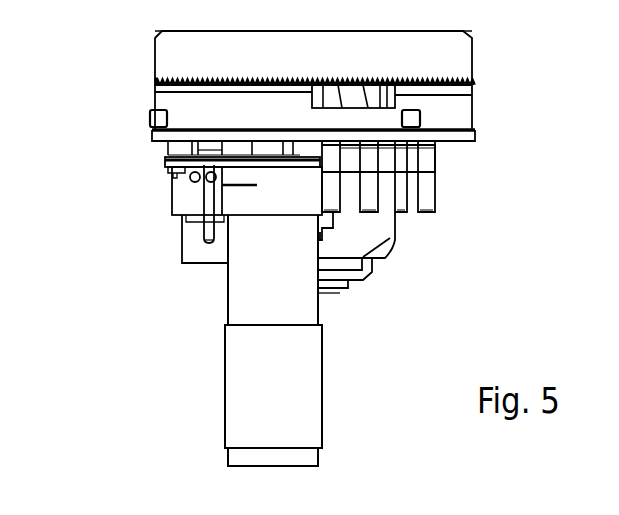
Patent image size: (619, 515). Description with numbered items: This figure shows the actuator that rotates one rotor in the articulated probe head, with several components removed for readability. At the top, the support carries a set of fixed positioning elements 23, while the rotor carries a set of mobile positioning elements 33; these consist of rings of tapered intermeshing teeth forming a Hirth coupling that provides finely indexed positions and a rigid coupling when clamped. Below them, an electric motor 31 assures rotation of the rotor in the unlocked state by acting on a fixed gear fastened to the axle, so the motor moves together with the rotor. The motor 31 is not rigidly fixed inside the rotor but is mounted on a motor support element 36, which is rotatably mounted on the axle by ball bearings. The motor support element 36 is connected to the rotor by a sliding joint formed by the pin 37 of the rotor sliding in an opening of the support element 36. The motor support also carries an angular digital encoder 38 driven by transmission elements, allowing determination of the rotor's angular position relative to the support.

The fixed positioning elements 23 is at (453, 63).
The mobile positioning elements 33 is at (453, 115).
The motor support element 36 is at (188, 203).
The pin 37 is at (210, 232).
The angular digital encoder 38 is at (192, 255).
The electric motor 31 is at (250, 310).